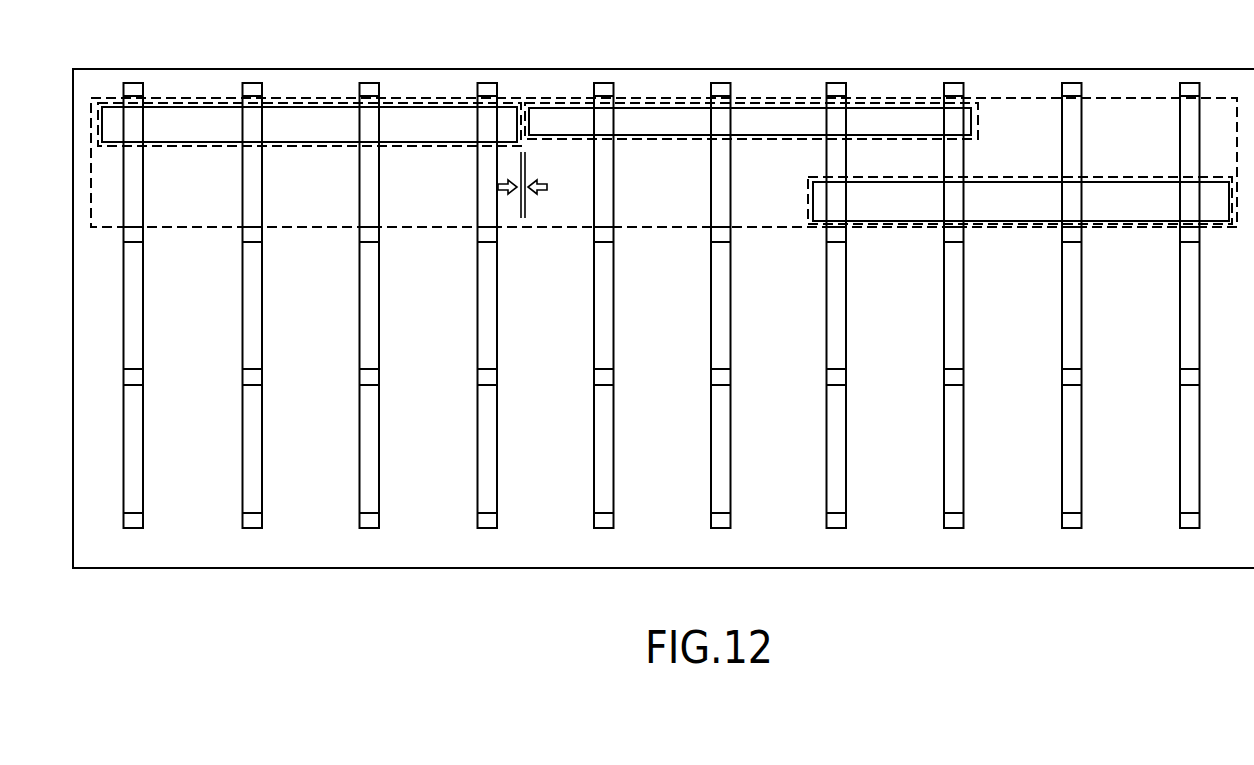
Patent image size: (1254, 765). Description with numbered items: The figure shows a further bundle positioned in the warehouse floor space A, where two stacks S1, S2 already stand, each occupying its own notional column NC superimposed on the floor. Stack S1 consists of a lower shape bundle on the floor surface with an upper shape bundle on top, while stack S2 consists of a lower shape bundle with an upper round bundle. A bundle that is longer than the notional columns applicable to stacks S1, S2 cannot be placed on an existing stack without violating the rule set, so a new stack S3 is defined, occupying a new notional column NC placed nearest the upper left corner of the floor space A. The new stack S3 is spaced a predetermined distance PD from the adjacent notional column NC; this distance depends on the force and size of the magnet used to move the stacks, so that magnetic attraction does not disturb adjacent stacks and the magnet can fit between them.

The stack S1 is at (187, 143).
The stack S2 is at (862, 223).
The new stack S3 is at (627, 136).
The notional column NC is at (228, 147).
The floor space A is at (223, 227).
The pattern distance PD is at (537, 190).